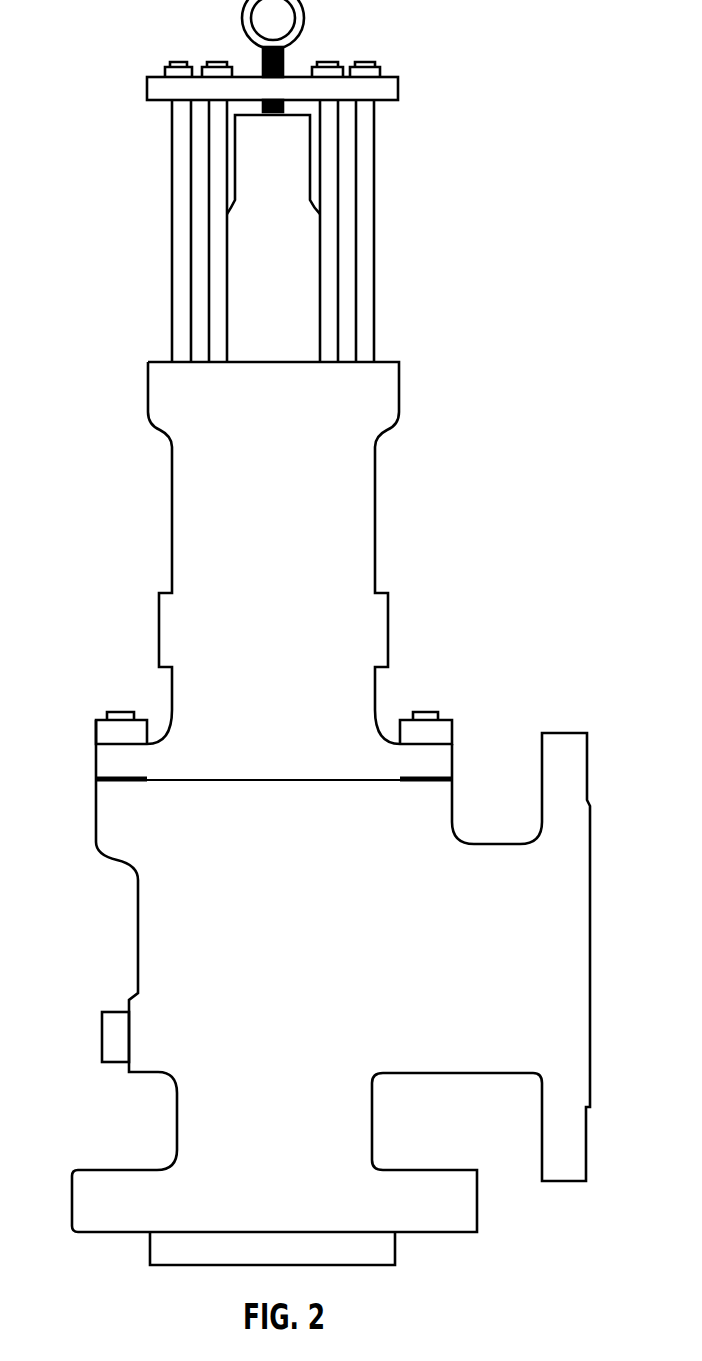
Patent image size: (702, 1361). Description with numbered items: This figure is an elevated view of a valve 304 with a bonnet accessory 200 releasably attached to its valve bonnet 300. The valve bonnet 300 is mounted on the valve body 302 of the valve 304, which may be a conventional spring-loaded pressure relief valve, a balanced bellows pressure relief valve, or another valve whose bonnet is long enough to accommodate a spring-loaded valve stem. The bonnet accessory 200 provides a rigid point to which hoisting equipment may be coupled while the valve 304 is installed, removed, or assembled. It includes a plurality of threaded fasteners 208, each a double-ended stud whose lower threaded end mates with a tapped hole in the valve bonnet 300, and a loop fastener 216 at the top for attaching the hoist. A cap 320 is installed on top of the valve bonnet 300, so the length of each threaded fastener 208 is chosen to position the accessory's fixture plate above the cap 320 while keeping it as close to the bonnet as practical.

The bonnet accessory 200 is at (282, 181).
The threaded fasteners 208 is at (172, 283).
The loop fastener 216 is at (303, 20).
The valve bonnet 300 is at (377, 520).
The valve body 302 is at (96, 825).
The valve 304 is at (138, 933).
The cap 320 is at (235, 176).